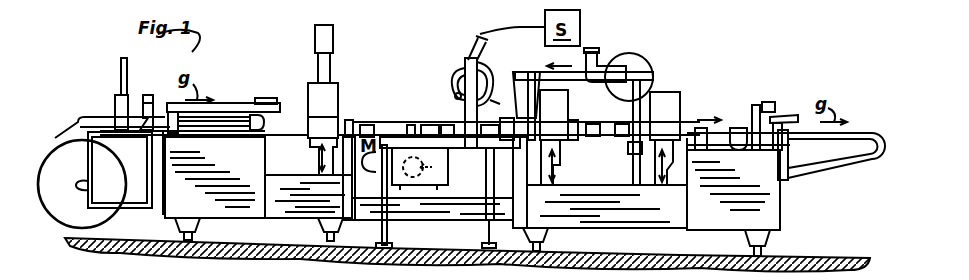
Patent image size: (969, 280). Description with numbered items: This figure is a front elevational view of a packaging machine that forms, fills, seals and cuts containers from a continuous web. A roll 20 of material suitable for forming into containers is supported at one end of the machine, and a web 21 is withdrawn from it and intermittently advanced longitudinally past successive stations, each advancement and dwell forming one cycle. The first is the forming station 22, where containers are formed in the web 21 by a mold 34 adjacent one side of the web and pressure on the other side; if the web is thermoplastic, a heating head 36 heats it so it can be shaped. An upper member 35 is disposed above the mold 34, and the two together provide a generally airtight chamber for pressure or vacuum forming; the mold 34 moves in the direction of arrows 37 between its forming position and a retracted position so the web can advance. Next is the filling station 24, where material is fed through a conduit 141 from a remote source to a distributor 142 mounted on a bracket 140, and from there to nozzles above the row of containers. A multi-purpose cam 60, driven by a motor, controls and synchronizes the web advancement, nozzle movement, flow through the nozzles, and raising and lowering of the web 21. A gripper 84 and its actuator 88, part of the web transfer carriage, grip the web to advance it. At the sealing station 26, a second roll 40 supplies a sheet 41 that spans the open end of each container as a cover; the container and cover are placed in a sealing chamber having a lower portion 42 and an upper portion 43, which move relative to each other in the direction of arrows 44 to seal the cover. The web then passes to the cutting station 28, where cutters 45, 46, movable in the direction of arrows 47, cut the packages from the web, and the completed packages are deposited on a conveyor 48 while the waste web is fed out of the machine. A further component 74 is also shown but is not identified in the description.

The roll 20 is at (58, 206).
The web 21 is at (54, 133).
The forming station 22 is at (289, 85).
The filling station 24 is at (446, 66).
The sealing station 26 is at (584, 139).
The cutting station 28 is at (697, 90).
The mold 34 is at (312, 132).
The upper member 35 is at (332, 100).
The heating head 36 is at (265, 101).
The arrows 37 is at (308, 208).
The second roll 40 is at (641, 61).
The sheet 41 is at (514, 94).
The lower portion 42 is at (565, 141).
The upper portion 43 is at (562, 116).
The arrows 44 is at (545, 170).
The cutter 45 is at (682, 145).
The cutter 46 is at (673, 118).
The arrows 47 is at (660, 170).
The conveyor 48 is at (857, 133).
The multi-purpose cam 60 is at (448, 167).
The tank 74 is at (261, 137).
The clamp 84 is at (612, 125).
The actuator 88 is at (614, 143).
The bracket 140 is at (468, 108).
The conduit 141 is at (519, 12).
The distributor 142 is at (474, 40).